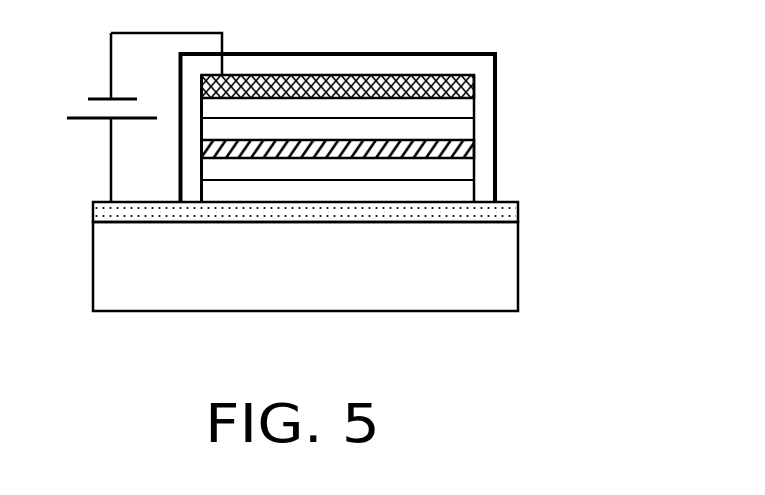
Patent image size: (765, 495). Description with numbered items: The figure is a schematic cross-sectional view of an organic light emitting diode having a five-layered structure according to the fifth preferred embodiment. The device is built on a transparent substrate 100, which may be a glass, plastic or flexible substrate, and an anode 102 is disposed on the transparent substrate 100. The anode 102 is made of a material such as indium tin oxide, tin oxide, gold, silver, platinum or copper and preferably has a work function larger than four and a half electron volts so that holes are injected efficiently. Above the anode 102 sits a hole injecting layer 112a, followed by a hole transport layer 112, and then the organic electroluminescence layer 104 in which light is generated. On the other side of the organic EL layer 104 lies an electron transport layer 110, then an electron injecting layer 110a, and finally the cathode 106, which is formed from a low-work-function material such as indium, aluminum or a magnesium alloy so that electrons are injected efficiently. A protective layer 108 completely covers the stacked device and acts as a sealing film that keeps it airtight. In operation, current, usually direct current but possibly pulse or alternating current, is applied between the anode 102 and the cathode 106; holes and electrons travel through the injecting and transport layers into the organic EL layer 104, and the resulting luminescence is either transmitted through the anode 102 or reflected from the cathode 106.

The transparent substrate 100 is at (480, 285).
The anode 102 is at (518, 208).
The organic electroluminescence layer 104 is at (457, 148).
The cathode 106 is at (474, 82).
The protective layer 108 is at (368, 53).
The electron transport layer 110 is at (462, 128).
The electron injecting layer 110a is at (462, 107).
The hole transport layer 112 is at (463, 168).
The hole injecting layer 112a is at (463, 187).